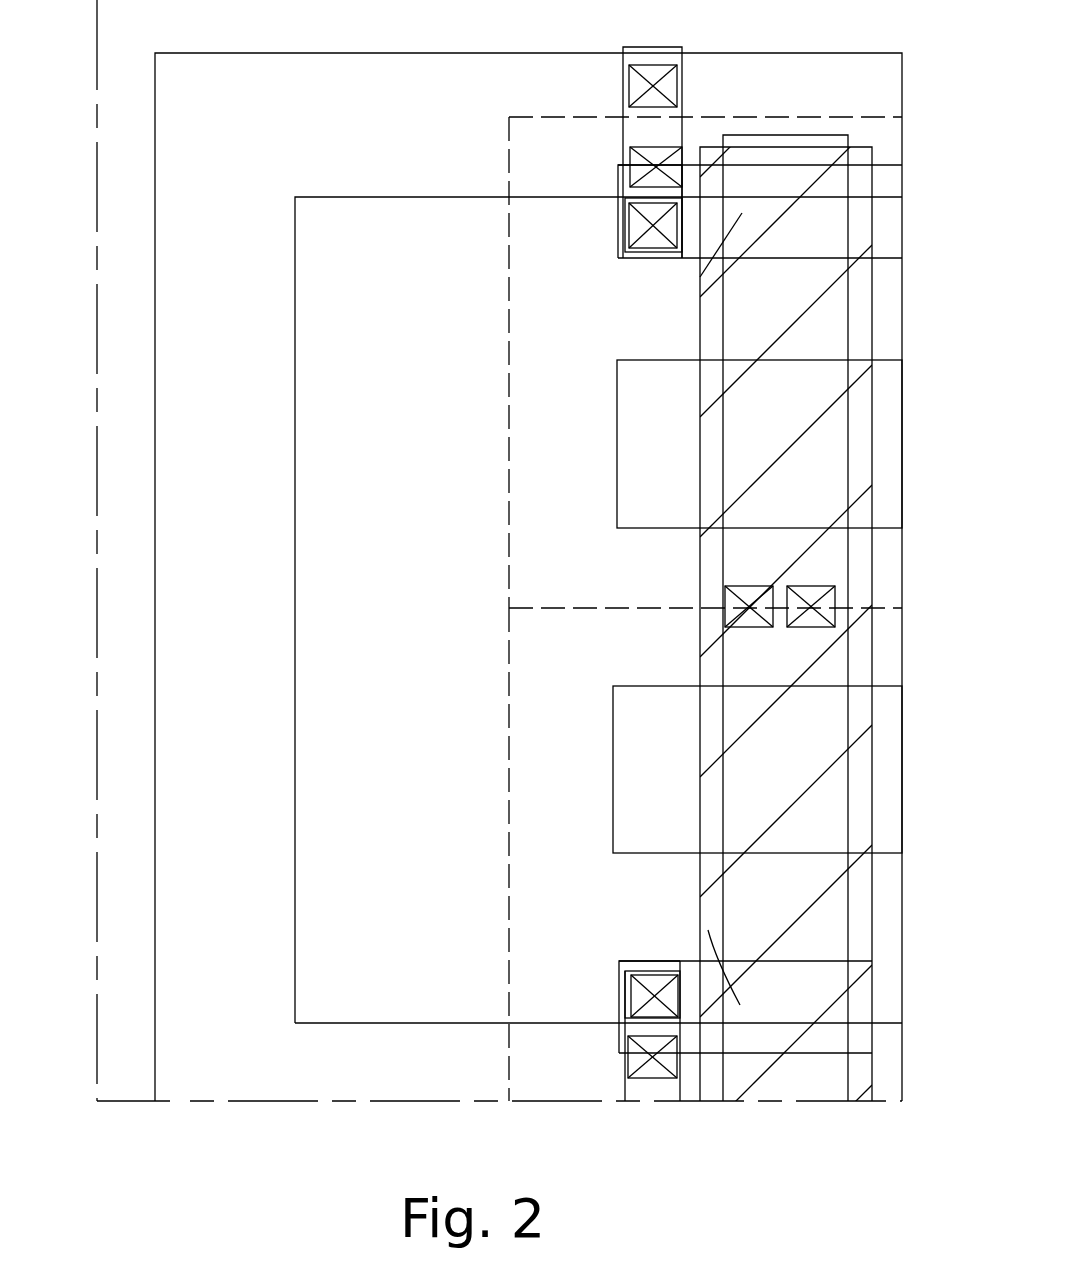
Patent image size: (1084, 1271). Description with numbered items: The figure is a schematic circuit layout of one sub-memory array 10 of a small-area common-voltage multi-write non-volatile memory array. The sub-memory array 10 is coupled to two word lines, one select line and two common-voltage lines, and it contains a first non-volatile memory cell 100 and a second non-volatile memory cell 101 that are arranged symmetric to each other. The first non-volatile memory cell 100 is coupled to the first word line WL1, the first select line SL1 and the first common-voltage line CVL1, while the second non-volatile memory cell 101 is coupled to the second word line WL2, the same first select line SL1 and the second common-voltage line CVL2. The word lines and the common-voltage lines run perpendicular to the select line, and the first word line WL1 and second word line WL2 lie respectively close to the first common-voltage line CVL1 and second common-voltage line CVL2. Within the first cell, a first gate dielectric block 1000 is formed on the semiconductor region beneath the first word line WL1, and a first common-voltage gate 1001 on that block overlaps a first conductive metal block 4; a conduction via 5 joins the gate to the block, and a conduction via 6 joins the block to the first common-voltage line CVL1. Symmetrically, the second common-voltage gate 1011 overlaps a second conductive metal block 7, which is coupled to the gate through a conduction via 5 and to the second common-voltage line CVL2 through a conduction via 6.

The sub-memory array 10 is at (779, 1193).
The first non-volatile memory cell 100 is at (509, 378).
The second non-volatile memory cell 101 is at (509, 836).
The first gate dielectric block 1000 is at (707, 350).
The first common-voltage gate 1001 is at (700, 277).
The second common-voltage gate 1011 is at (708, 930).
The first conductive metal block 4 is at (625, 86).
The conduction via 5 is at (637, 239).
The conduction via 6 is at (637, 160).
The second conductive metal block 7 is at (652, 973).
The first select line SL1 is at (812, 140).
The first word line WL1 is at (642, 445).
The second word line WL2 is at (642, 785).
The first common-voltage line CVL1 is at (373, 188).
The second common-voltage line CVL2 is at (361, 1032).